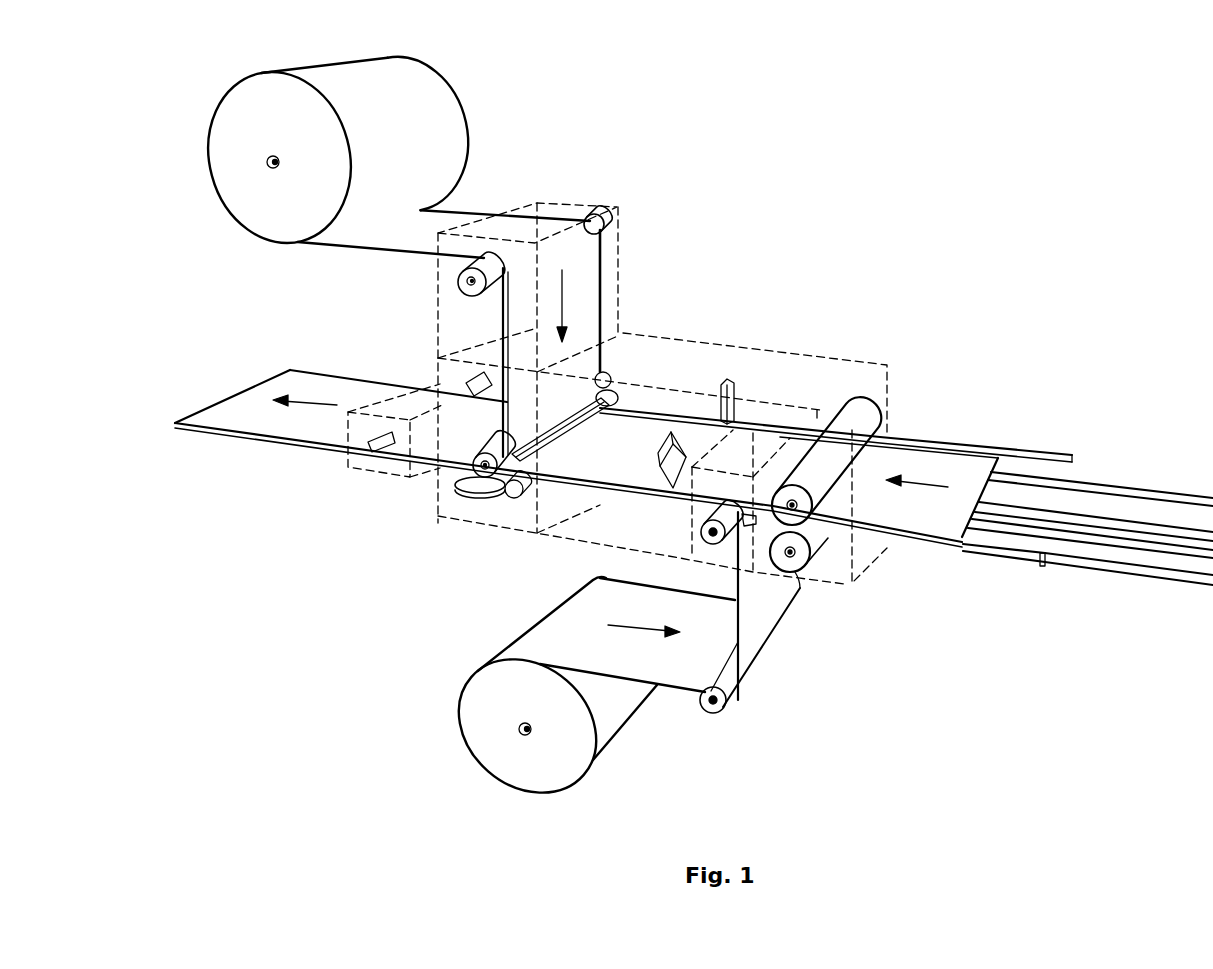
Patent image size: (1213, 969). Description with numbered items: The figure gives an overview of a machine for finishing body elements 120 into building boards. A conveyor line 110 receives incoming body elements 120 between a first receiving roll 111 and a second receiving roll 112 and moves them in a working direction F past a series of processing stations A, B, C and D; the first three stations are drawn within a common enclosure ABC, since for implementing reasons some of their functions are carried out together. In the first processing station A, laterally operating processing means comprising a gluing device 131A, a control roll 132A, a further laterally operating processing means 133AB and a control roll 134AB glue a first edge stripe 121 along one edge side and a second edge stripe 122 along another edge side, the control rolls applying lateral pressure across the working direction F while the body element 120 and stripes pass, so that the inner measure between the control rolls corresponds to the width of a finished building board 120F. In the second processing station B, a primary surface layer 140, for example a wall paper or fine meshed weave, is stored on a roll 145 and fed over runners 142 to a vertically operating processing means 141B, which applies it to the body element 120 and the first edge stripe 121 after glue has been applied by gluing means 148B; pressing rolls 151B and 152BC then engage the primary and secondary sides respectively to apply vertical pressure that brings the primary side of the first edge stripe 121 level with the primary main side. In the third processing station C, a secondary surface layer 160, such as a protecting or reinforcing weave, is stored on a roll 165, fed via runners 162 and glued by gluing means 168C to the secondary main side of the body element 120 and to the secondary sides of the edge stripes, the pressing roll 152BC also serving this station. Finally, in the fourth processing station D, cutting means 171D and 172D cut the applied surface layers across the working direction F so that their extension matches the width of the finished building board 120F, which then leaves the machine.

The roll 165 is at (400, 102).
The secondary surface layer 160 is at (580, 273).
The runners 162 is at (610, 218).
The control roll 134AB is at (622, 374).
The laterally operating processing means 133AB is at (475, 492).
The pressing roll 152BC is at (458, 476).
The pressing roll 151B is at (490, 500).
The third processing station C is at (573, 203).
The fourth processing station D is at (433, 378).
The station ABC is at (527, 530).
The first processing station A is at (725, 345).
The second processing station B is at (791, 385).
The finished building board 120F is at (310, 382).
The cutting means 171D is at (353, 452).
The cutting means 172D is at (472, 386).
The body element 120 is at (917, 467).
The working direction F is at (961, 491).
The second edge stripe 122 is at (1027, 452).
The conveyor line 110 is at (1125, 507).
The first edge stripe 121 is at (990, 550).
The gluing means 168C is at (563, 427).
The gluing device 131A is at (658, 452).
The control roll 132A is at (735, 383).
The second receiving roll 112 is at (870, 413).
The first receiving roll 111 is at (797, 562).
The gluing means 148B is at (748, 524).
The vertically operating processing means 141B is at (702, 537).
The primary surface layer 140 is at (758, 632).
The runners 142 is at (725, 712).
The roll 145 is at (482, 703).